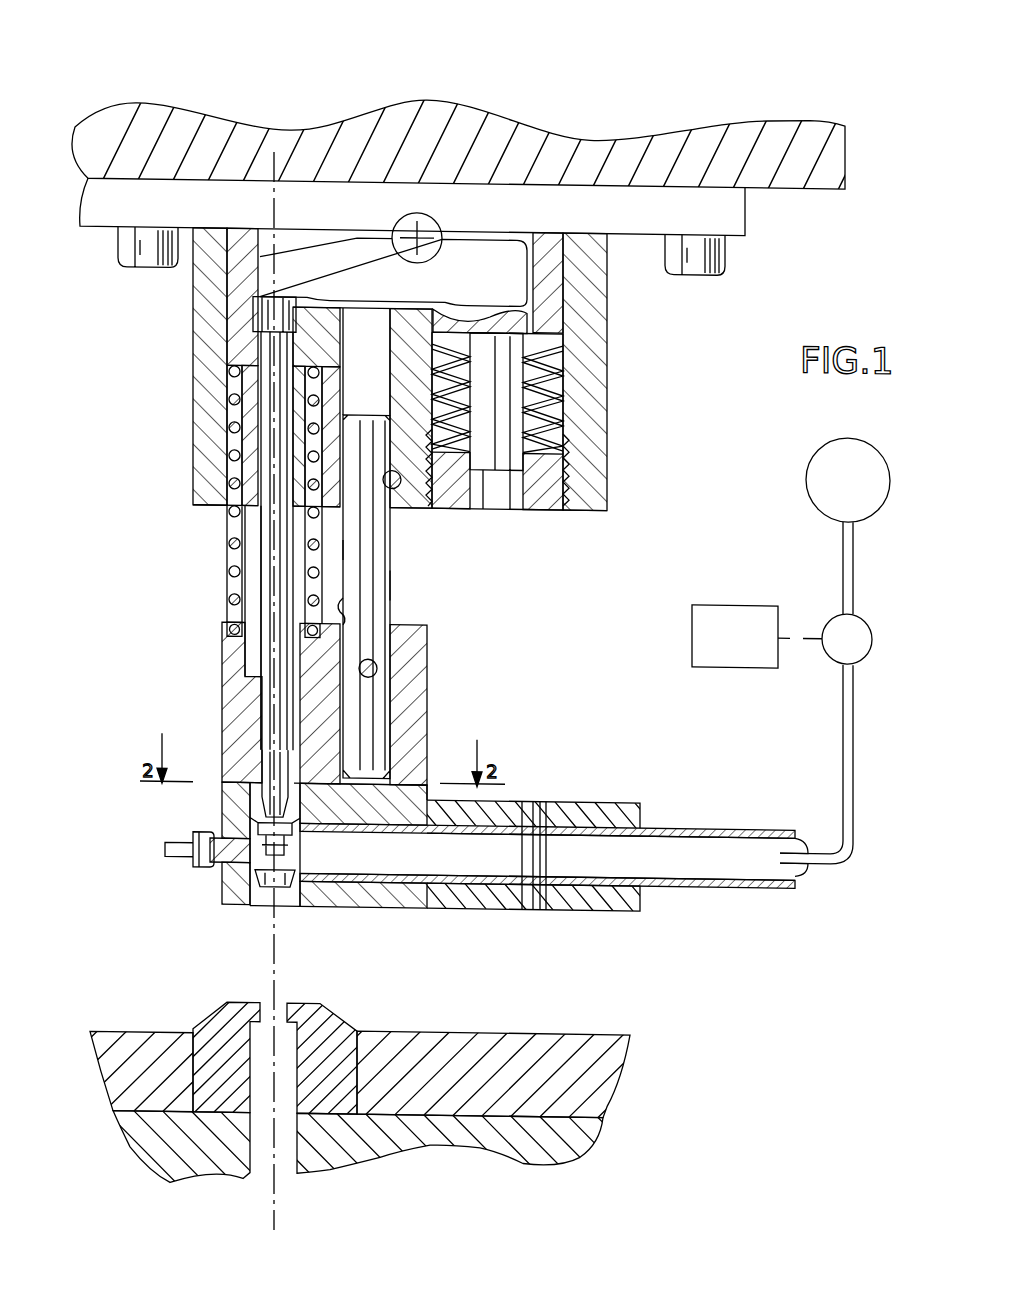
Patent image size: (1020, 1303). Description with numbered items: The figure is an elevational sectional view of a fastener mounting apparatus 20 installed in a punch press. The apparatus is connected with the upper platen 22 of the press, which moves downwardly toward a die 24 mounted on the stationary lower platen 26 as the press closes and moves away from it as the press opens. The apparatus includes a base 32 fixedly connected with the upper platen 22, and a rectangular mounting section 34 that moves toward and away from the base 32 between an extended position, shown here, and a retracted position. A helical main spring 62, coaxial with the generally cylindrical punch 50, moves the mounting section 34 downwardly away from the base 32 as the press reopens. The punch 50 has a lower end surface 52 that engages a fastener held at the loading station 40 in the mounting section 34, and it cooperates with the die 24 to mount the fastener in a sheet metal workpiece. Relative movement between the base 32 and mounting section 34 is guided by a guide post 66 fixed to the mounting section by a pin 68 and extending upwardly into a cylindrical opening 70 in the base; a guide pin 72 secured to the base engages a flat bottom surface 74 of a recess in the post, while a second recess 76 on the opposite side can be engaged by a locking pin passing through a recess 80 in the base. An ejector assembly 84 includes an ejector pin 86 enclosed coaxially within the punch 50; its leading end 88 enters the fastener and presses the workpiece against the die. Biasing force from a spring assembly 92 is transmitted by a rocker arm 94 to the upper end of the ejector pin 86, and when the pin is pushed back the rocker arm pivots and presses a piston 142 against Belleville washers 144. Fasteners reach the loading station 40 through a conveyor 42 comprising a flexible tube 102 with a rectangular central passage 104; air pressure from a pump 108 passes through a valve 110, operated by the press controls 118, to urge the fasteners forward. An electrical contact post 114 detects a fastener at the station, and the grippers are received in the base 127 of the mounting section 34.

The fastener mounting apparatus 20 is at (158, 502).
The upper platen 22 is at (340, 137).
The die 24 is at (228, 1018).
The lower platen 26 is at (555, 1131).
The base 32 is at (190, 445).
The mounting section 34 is at (220, 715).
The loading station 40 is at (248, 819).
The conveyor 42 is at (702, 807).
The punch 50 is at (240, 587).
The lower end surface 52 is at (225, 779).
The main spring 62 is at (232, 544).
The guide post 66 is at (360, 542).
The pin 68 is at (372, 665).
The cylindrical opening 70 is at (364, 325).
The guide pin 72 is at (396, 486).
The flat bottom surface 74 is at (385, 572).
The second recess 76 is at (340, 612).
The recess 80 is at (340, 467).
The ejector assembly 84 is at (243, 302).
The ejector pin 86 is at (260, 664).
The leading end 88 is at (287, 818).
The spring assembly 92 is at (560, 390).
The rocker arm 94 is at (483, 257).
The flexible tube 102 is at (688, 876).
The central passage 104 is at (728, 845).
The pump 108 is at (820, 459).
The valve 110 is at (840, 638).
The electrical contact post 114 is at (228, 860).
The controls 118 is at (712, 645).
The base of the mounting section 127 is at (400, 884).
The piston 142 is at (548, 274).
The Belleville washers 144 is at (548, 431).